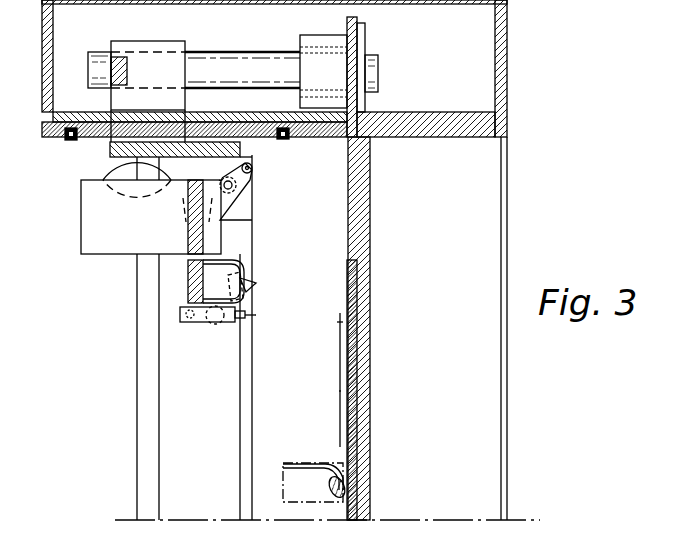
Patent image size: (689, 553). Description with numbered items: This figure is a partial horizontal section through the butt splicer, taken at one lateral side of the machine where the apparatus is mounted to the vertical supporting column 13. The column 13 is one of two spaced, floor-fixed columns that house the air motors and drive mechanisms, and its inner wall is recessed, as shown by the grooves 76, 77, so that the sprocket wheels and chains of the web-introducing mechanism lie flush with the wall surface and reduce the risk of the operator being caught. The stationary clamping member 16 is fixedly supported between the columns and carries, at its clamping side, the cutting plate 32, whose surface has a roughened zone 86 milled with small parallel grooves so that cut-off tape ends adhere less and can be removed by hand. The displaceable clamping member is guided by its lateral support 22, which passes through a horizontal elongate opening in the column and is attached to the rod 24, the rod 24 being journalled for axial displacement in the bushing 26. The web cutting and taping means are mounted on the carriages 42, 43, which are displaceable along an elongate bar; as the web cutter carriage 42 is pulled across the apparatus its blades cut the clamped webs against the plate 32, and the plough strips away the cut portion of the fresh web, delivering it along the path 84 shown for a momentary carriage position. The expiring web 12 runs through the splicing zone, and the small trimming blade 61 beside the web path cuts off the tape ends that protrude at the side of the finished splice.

The expiring web 12 is at (340, 390).
The vertical supporting column 13 is at (500, 63).
The clamping member 16 is at (370, 208).
The lateral support 22 is at (148, 62).
The rod 24 is at (243, 63).
The bushing 26 is at (320, 62).
The cutting plate 32 is at (348, 263).
The carriage 42 is at (190, 283).
The carriage 43 is at (93, 238).
The trimming blade 61 is at (245, 315).
The groove 76 is at (68, 141).
The groove 77 is at (289, 140).
The path of removed strip 84 is at (283, 463).
The roughened zone 86 is at (340, 322).